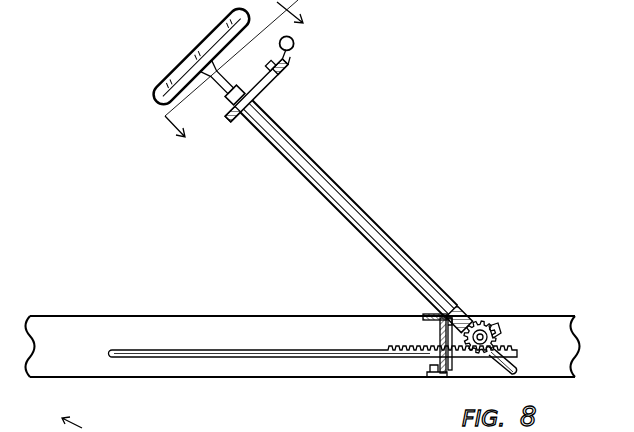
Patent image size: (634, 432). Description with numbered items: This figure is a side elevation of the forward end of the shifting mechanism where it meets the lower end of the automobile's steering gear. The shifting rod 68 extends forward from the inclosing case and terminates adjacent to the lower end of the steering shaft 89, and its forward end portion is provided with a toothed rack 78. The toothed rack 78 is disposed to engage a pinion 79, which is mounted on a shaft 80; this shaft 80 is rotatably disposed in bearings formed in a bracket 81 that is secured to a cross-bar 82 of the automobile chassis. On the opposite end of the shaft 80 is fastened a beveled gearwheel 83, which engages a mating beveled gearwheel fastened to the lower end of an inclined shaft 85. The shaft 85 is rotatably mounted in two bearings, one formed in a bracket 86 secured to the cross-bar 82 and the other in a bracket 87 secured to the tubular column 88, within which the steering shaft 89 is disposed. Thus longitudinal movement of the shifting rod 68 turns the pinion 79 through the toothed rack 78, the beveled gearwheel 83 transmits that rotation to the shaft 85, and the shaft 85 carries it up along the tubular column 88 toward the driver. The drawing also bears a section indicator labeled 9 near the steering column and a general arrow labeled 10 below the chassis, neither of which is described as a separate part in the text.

The section line 9- 9 is at (226, 76).
The direction arrow / apparatus 10 is at (81, 417).
The shifting rod 68 is at (135, 353).
The toothed rack 78 is at (512, 348).
The pinion 79 is at (490, 326).
The shaft 80 is at (477, 328).
The bracket 81 is at (458, 341).
The cross-bar 82 is at (425, 318).
The beveled gearwheel 83 is at (497, 332).
The shaft 85 is at (392, 246).
The bracket 86 is at (468, 300).
The bracket 87 is at (264, 93).
The tubular column 88 is at (320, 163).
The steering shaft 89 is at (231, 97).